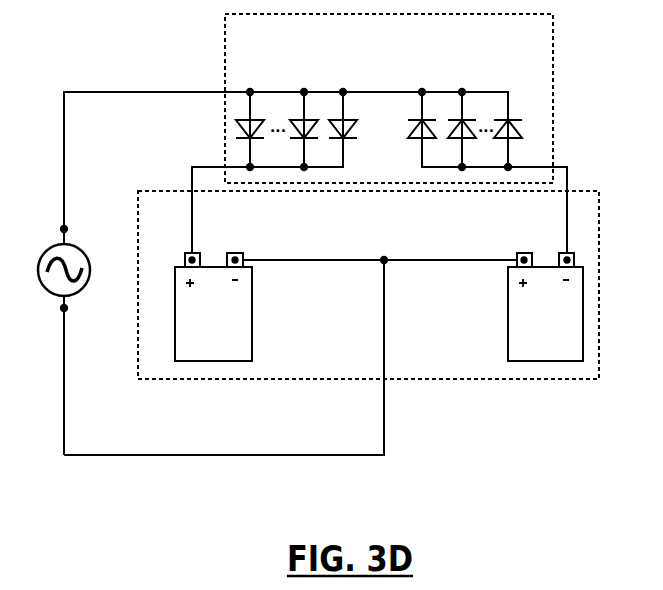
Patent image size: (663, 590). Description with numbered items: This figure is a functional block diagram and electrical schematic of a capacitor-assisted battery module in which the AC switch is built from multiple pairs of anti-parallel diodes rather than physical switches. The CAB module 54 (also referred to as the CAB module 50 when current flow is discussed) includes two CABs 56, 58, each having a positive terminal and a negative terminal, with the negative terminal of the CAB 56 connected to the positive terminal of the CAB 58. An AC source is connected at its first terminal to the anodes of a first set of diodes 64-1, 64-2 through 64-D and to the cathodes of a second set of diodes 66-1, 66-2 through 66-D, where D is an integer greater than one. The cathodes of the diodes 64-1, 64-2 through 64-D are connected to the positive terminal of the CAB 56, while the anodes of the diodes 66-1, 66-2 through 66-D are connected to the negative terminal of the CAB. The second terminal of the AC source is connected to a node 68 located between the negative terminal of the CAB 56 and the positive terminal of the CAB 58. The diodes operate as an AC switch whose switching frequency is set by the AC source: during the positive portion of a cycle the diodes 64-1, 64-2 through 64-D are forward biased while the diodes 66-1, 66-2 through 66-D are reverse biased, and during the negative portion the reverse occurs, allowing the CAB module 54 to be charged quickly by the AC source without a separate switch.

The CAB module 50 is at (96, 76).
The CAB module 54 is at (168, 190).
The CAB 56 is at (168, 364).
The CAB 58 is at (553, 367).
The diode 64-D is at (236, 122).
The diode 64-2 is at (316, 126).
The diode 64-1 is at (357, 127).
The diode 66-1 is at (436, 128).
The diode 66-2 is at (474, 128).
The diode 66-D is at (522, 128).
The node 68 is at (384, 258).